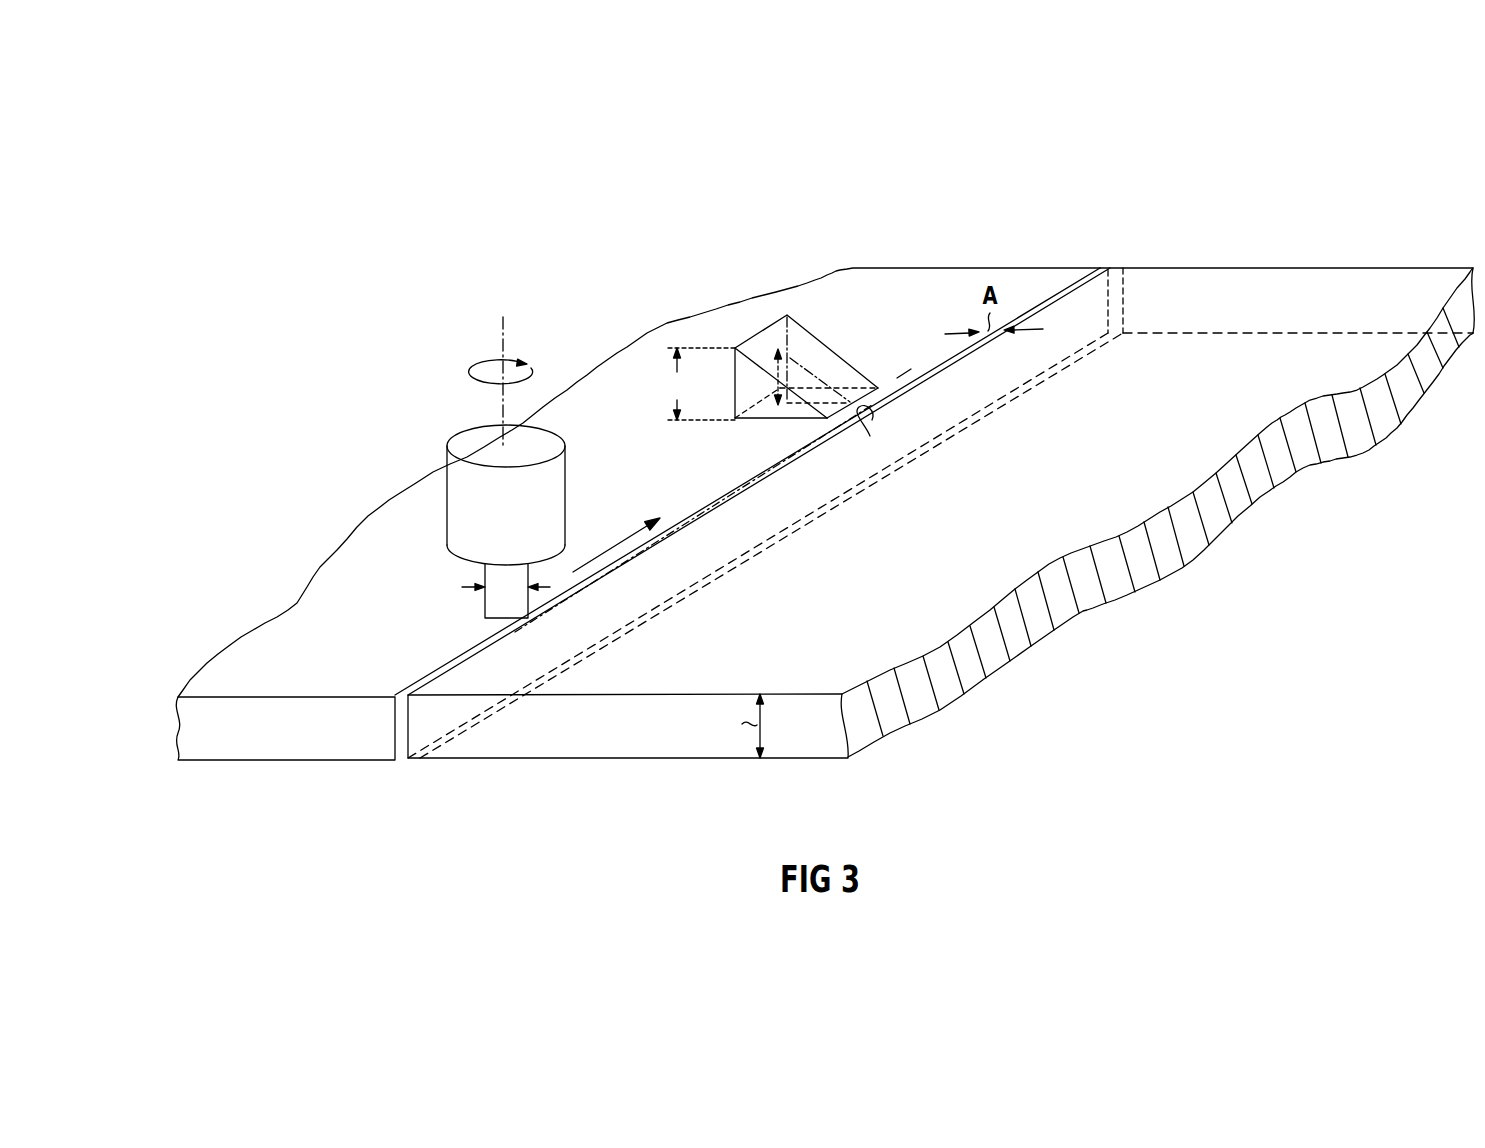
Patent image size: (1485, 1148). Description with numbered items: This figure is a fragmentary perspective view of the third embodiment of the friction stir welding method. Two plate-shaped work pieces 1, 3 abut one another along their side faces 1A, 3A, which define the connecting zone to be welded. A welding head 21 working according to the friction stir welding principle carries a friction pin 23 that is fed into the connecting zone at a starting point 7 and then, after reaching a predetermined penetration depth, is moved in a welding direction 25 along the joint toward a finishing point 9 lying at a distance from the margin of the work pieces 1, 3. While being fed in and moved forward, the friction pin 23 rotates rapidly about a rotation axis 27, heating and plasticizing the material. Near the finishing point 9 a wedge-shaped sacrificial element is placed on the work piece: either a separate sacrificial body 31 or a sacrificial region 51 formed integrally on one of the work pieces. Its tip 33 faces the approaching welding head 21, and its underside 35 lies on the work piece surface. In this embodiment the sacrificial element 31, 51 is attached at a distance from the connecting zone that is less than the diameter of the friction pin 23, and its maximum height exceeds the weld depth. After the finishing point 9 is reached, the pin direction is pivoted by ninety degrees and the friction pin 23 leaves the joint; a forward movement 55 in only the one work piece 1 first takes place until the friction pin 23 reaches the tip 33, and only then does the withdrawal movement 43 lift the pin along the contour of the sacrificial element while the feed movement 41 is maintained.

The work piece 1 is at (342, 667).
The work piece 3 is at (866, 621).
The side face 1A is at (1040, 305).
The side face 3A is at (1110, 316).
The starting point 7 is at (519, 640).
The finishing point 9 is at (882, 417).
The welding head 21 is at (487, 527).
The friction pin 23 is at (500, 617).
The welding direction 25 is at (617, 547).
The rotation axis 27 is at (503, 336).
The sacrificial body 31 is at (798, 336).
The tip 33 is at (878, 389).
The underside 35 is at (826, 392).
The feed movement 41 is at (800, 409).
The withdrawal movement 43 is at (776, 372).
The sacrificial region 51 is at (772, 316).
The forward movement 55 is at (870, 436).